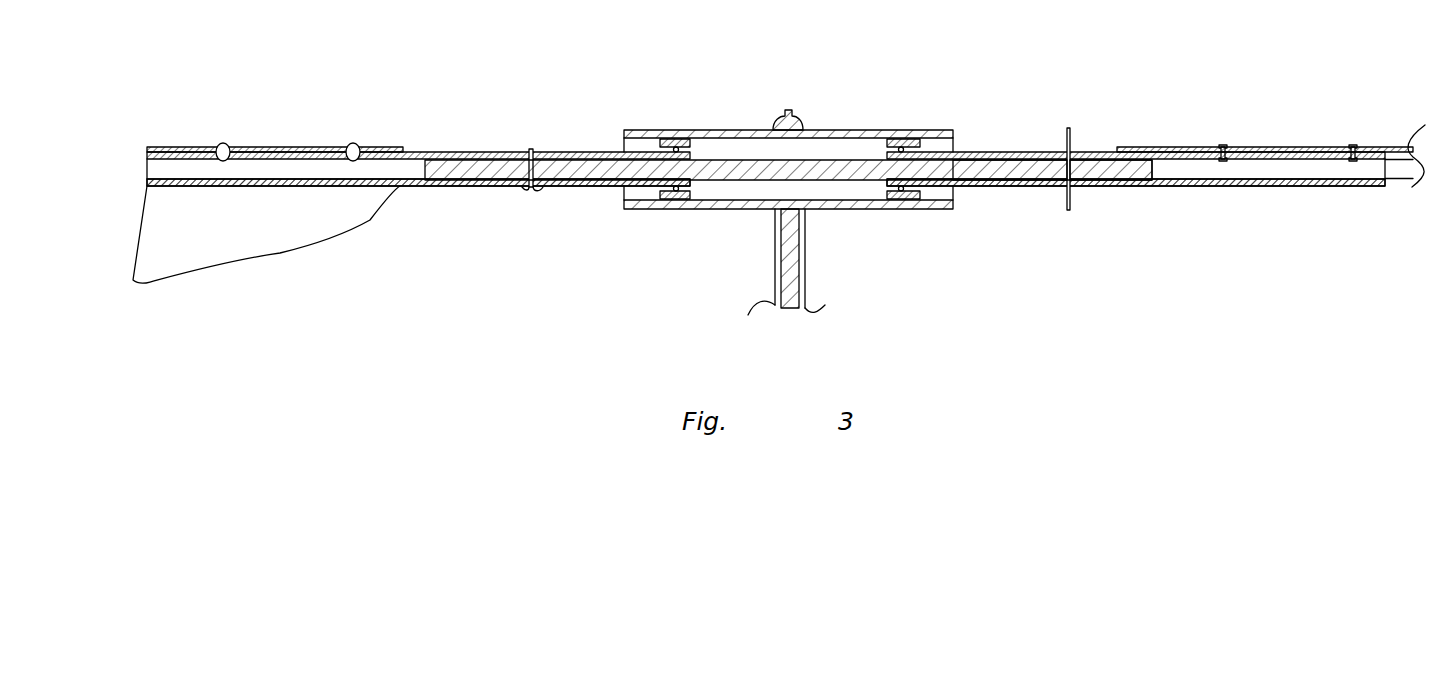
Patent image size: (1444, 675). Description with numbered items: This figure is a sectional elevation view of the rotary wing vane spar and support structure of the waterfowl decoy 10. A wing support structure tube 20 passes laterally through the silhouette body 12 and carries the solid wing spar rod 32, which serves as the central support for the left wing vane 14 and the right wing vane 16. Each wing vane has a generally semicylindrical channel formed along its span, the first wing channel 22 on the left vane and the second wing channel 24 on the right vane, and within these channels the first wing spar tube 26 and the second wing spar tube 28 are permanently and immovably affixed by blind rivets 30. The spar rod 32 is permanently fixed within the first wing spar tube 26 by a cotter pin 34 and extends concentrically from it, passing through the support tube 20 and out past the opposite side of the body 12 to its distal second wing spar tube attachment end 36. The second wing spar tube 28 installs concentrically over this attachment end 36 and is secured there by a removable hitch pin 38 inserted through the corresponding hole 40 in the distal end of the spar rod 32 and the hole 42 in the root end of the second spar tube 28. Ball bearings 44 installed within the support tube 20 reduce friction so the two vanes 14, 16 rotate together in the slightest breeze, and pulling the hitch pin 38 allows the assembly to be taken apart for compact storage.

The decoy 10 is at (578, 374).
The silhouette body 12 is at (805, 280).
The left wing vane 14 is at (240, 263).
The right wing vane 16 is at (1402, 150).
The wing support structure tube 20 is at (730, 130).
The first wing channel 22 is at (192, 158).
The second wing channel 24 is at (1403, 165).
The first wing spar tube 26 is at (367, 186).
The second wing spar tube 28 is at (1318, 187).
The blind rivets 30 is at (353, 145).
The wing spar rod 32 is at (843, 160).
The cotter pin 34 is at (532, 148).
The second wing spar tube attachment end 36 is at (1030, 163).
The hitch pin 38 is at (1070, 143).
The hole 40 is at (1042, 168).
The hole 42 is at (1070, 182).
The ball bearings 44 is at (663, 190).